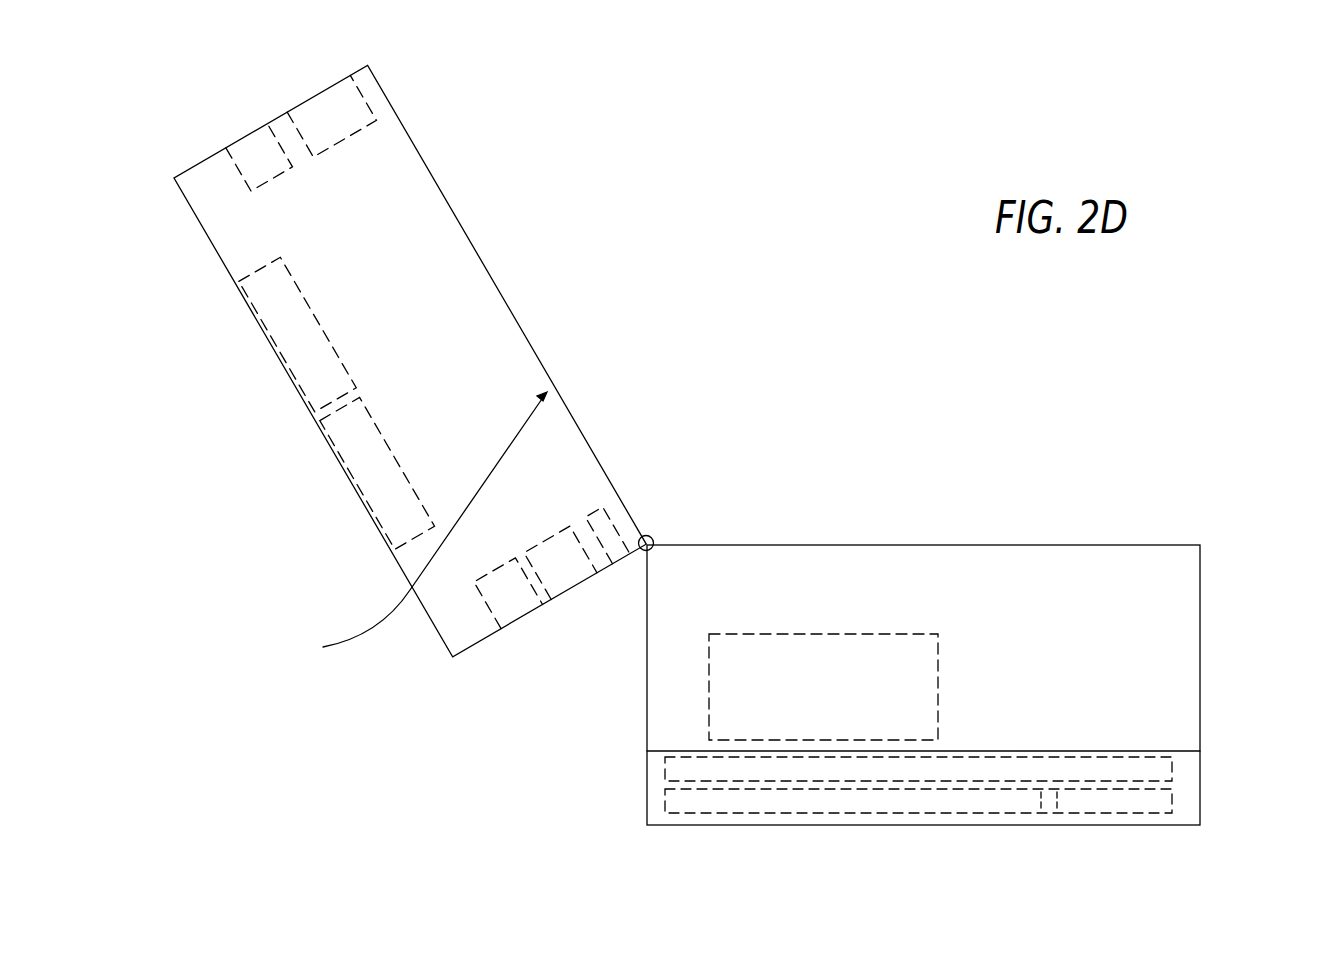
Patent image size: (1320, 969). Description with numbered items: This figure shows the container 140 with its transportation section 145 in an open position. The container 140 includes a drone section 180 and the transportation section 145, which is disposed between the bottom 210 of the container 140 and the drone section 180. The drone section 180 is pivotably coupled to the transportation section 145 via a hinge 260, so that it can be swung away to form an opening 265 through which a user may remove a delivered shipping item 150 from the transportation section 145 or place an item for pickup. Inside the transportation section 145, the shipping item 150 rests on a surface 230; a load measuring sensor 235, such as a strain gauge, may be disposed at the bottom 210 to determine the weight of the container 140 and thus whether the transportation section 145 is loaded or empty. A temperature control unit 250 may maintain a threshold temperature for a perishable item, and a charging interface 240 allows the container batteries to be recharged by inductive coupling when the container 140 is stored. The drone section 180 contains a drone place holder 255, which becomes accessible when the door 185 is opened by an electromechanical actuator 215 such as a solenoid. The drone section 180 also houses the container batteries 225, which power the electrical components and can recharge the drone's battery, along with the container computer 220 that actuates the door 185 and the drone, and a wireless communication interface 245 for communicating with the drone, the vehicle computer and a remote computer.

The container 140 is at (641, 185).
The drone section 180 is at (278, 112).
The container batteries 225 is at (364, 129).
The electromechanical actuator 215 is at (288, 176).
The door 185 is at (335, 460).
The drone place holder 255 is at (413, 526).
The container computer 220 is at (555, 530).
The wireless communication interface 245 is at (597, 508).
The hinge 260 is at (653, 535).
The opening 265 is at (1004, 516).
The transportation section 145 is at (1200, 622).
The shipping item 150 is at (940, 656).
The surface 230 is at (1025, 750).
The load measuring sensor 235 is at (1173, 770).
The temperature control unit 250 is at (1173, 808).
The charging interface 240 is at (1005, 813).
The bottom 210 is at (1175, 827).